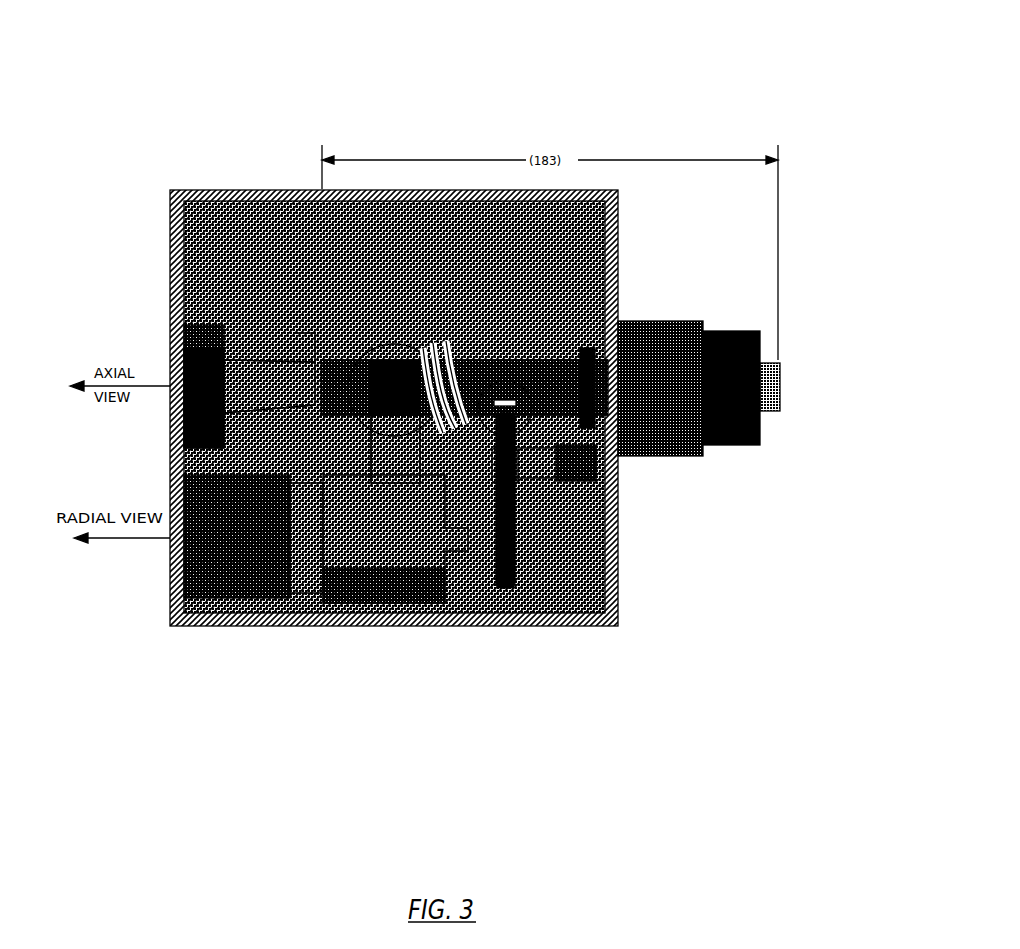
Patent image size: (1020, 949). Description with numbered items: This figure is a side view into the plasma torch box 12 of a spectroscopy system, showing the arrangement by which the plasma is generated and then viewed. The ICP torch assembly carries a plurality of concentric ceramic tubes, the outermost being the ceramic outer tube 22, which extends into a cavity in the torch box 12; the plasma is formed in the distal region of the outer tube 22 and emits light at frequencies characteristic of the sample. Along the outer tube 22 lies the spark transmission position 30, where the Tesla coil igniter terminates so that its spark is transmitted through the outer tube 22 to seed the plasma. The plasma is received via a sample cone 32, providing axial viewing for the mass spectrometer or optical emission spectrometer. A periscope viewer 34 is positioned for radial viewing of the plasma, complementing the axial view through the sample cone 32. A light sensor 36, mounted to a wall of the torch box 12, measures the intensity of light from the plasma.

The plasma torch box 12 is at (599, 110).
The ceramic outer tube 22 is at (750, 443).
The spark transmission position 30 is at (497, 385).
The sample cone 32 is at (239, 348).
The periscope viewer 34 is at (332, 598).
The light sensor 36 is at (386, 332).